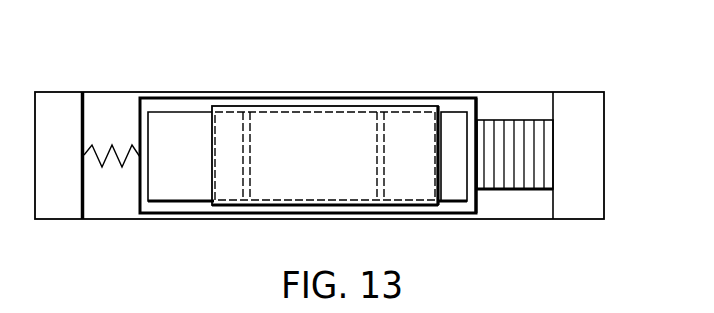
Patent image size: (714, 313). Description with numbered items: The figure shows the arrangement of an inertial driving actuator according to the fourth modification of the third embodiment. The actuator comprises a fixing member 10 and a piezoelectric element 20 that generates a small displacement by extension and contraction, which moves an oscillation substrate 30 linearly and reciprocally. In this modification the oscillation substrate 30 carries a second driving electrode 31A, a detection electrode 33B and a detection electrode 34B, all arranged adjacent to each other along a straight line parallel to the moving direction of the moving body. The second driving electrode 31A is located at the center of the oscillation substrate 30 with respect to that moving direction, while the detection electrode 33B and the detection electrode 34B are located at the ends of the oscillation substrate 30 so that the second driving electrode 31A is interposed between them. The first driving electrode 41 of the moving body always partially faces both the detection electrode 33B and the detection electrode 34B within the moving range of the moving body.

The fixing member 10 is at (57, 105).
The piezoelectric element 20 is at (528, 155).
The oscillation substrate 30 is at (467, 102).
The second driving electrode 31A is at (300, 123).
The detection electrode 33B is at (450, 125).
The detection electrode 34B is at (188, 188).
The first driving electrode 41 is at (212, 126).